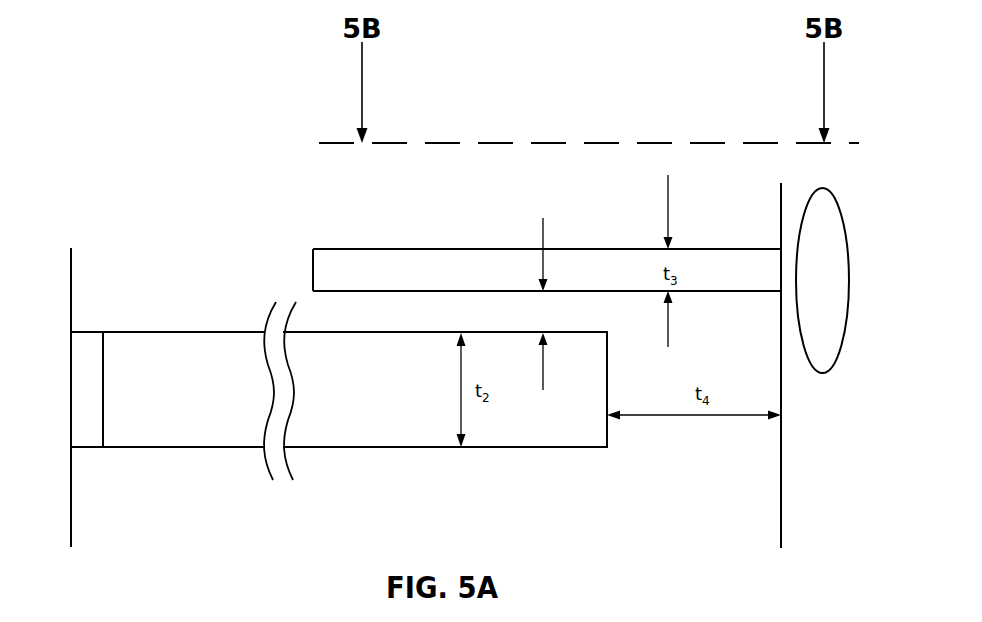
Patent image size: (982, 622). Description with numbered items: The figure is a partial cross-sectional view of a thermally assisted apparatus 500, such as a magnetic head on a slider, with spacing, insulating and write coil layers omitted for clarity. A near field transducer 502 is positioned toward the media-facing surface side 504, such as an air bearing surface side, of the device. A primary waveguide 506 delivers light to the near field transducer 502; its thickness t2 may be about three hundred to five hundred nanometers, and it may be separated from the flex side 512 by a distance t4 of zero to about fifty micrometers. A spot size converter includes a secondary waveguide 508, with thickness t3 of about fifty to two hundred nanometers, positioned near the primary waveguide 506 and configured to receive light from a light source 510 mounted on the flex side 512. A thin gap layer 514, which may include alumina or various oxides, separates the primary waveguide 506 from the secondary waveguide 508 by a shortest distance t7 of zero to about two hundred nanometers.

The thermally assisted apparatus 500 is at (150, 169).
The near field transducer 502 is at (90, 332).
The media-facing surface side 504 is at (71, 460).
The primary waveguide 506 is at (174, 332).
The secondary waveguide 508 is at (424, 249).
The light source 510 is at (840, 345).
The flex side 512 is at (812, 457).
The gap layer 514 is at (424, 322).